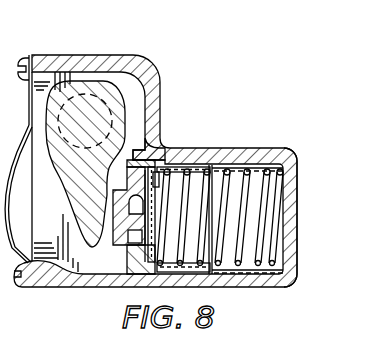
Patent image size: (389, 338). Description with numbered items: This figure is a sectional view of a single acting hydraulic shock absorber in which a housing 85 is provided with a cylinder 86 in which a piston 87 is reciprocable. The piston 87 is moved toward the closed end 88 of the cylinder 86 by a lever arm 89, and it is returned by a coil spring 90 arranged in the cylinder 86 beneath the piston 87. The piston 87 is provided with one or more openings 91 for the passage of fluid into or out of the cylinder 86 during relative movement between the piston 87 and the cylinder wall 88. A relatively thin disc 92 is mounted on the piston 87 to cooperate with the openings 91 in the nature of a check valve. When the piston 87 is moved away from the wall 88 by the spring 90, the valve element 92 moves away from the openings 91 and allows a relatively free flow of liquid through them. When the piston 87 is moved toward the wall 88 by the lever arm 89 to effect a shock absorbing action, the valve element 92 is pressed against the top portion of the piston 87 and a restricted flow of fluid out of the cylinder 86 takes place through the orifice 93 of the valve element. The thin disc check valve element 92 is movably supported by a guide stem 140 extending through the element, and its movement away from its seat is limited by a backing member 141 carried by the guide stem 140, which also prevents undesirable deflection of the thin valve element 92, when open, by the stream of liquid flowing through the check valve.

The housing 85 is at (195, 153).
The cylinder 86 is at (237, 172).
The piston 87 is at (192, 253).
The closed end of the cylinder 88 is at (305, 181).
The lever arm 89 is at (72, 207).
The coil spring 90 is at (257, 264).
The openings 91 is at (128, 260).
The thin disc 92 is at (162, 150).
The orifice 93 is at (158, 254).
The guide stem 140 is at (132, 189).
The backing member 141 is at (130, 166).